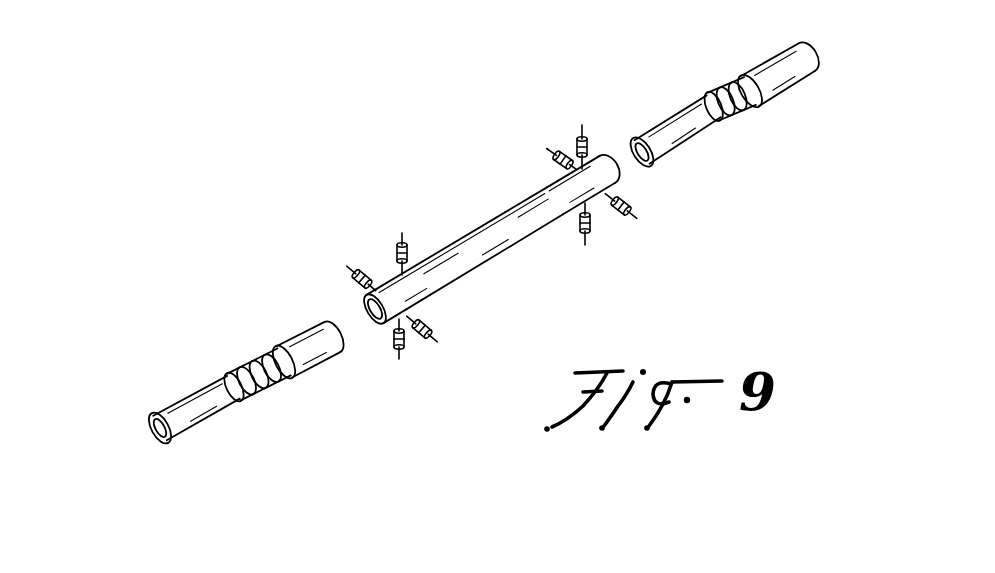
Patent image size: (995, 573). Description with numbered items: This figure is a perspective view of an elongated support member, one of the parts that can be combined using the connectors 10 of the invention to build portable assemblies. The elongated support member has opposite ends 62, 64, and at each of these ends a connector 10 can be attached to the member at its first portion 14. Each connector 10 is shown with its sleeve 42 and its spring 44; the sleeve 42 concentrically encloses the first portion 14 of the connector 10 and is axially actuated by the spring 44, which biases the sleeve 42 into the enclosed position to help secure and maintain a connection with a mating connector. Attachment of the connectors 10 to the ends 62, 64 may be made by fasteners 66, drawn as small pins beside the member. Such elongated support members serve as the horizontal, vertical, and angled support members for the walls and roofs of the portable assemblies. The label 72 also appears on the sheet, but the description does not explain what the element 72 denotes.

The fiber optic connector 10 is at (467, 230).
The connector tube 14 is at (212, 392).
The connector housing 42 is at (467, 266).
The threaded coupling 44 is at (268, 382).
The alignment sleeve 62 is at (458, 202).
The sleeve end portion 64 is at (606, 158).
The fastener pins 66 is at (366, 272).
The component 72 is at (429, 9).